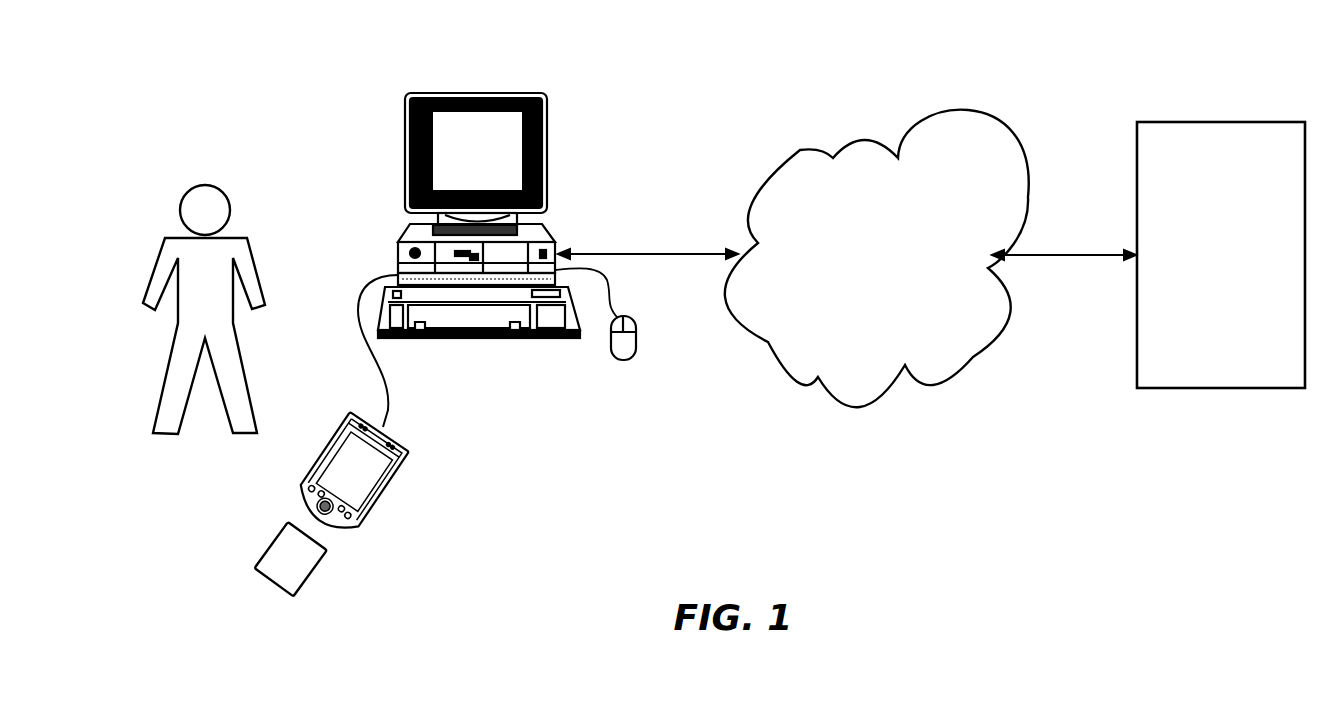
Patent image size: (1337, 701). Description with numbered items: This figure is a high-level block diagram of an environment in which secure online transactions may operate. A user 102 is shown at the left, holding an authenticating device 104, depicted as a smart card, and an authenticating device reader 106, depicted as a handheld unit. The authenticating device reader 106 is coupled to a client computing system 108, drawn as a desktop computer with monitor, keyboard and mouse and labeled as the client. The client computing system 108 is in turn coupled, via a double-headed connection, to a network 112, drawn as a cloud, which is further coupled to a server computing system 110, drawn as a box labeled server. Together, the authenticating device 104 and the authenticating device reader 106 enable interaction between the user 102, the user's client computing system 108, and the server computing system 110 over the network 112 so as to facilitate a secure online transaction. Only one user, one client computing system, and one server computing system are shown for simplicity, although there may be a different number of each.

The user 102 is at (235, 234).
The authenticating device 104 is at (315, 571).
The authenticating device reader 106 is at (395, 480).
The client computing system 108 is at (522, 91).
The server computing system 110 is at (1235, 122).
The network 112 is at (867, 138).